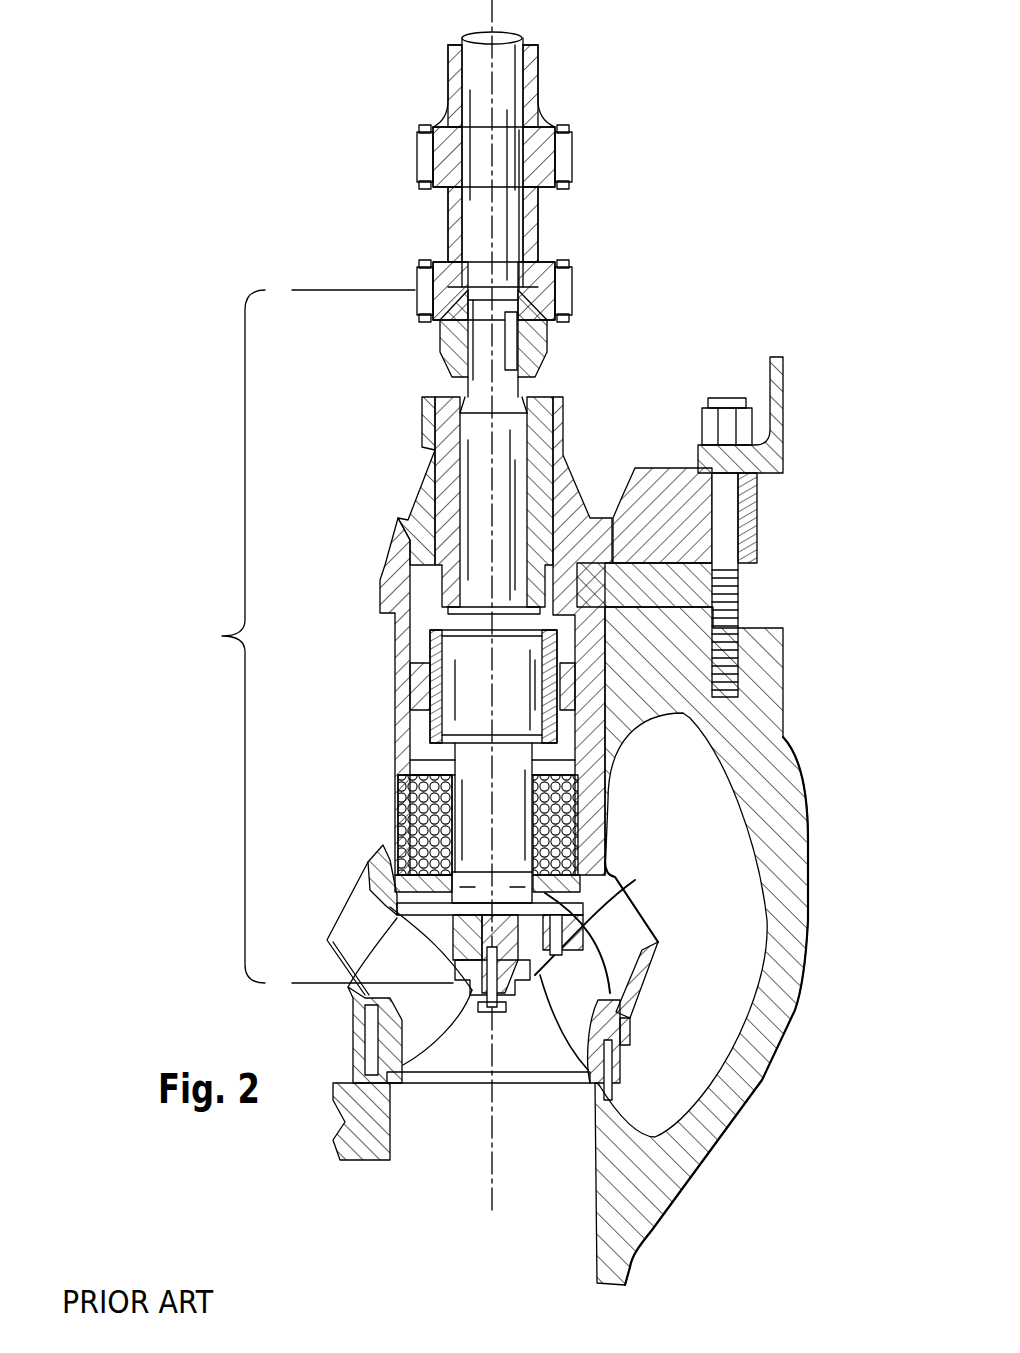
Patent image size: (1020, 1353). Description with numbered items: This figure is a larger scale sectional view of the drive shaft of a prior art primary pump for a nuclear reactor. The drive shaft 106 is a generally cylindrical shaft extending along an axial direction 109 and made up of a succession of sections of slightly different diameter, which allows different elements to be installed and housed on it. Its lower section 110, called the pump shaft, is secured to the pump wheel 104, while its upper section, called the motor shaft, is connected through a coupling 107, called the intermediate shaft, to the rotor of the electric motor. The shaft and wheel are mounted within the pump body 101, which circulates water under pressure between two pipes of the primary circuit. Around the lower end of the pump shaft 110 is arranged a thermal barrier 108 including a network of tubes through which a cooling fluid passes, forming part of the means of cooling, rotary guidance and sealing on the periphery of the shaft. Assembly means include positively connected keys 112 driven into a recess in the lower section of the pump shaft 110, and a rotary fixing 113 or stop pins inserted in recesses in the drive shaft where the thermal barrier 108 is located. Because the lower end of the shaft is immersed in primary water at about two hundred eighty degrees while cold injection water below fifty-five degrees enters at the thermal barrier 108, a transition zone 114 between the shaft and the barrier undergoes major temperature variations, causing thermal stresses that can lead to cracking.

The pump body 101 is at (790, 855).
The pump wheel 104 is at (608, 905).
The drive shaft 106 is at (497, 442).
The coupling 107 is at (540, 228).
The thermal barrier 108 is at (400, 797).
The axial direction 109 is at (490, 1188).
The lower section (pump shaft) 110 is at (312, 636).
The keys 112 is at (625, 987).
The rotary fixing 113 is at (492, 865).
The transition zone 114 is at (370, 853).